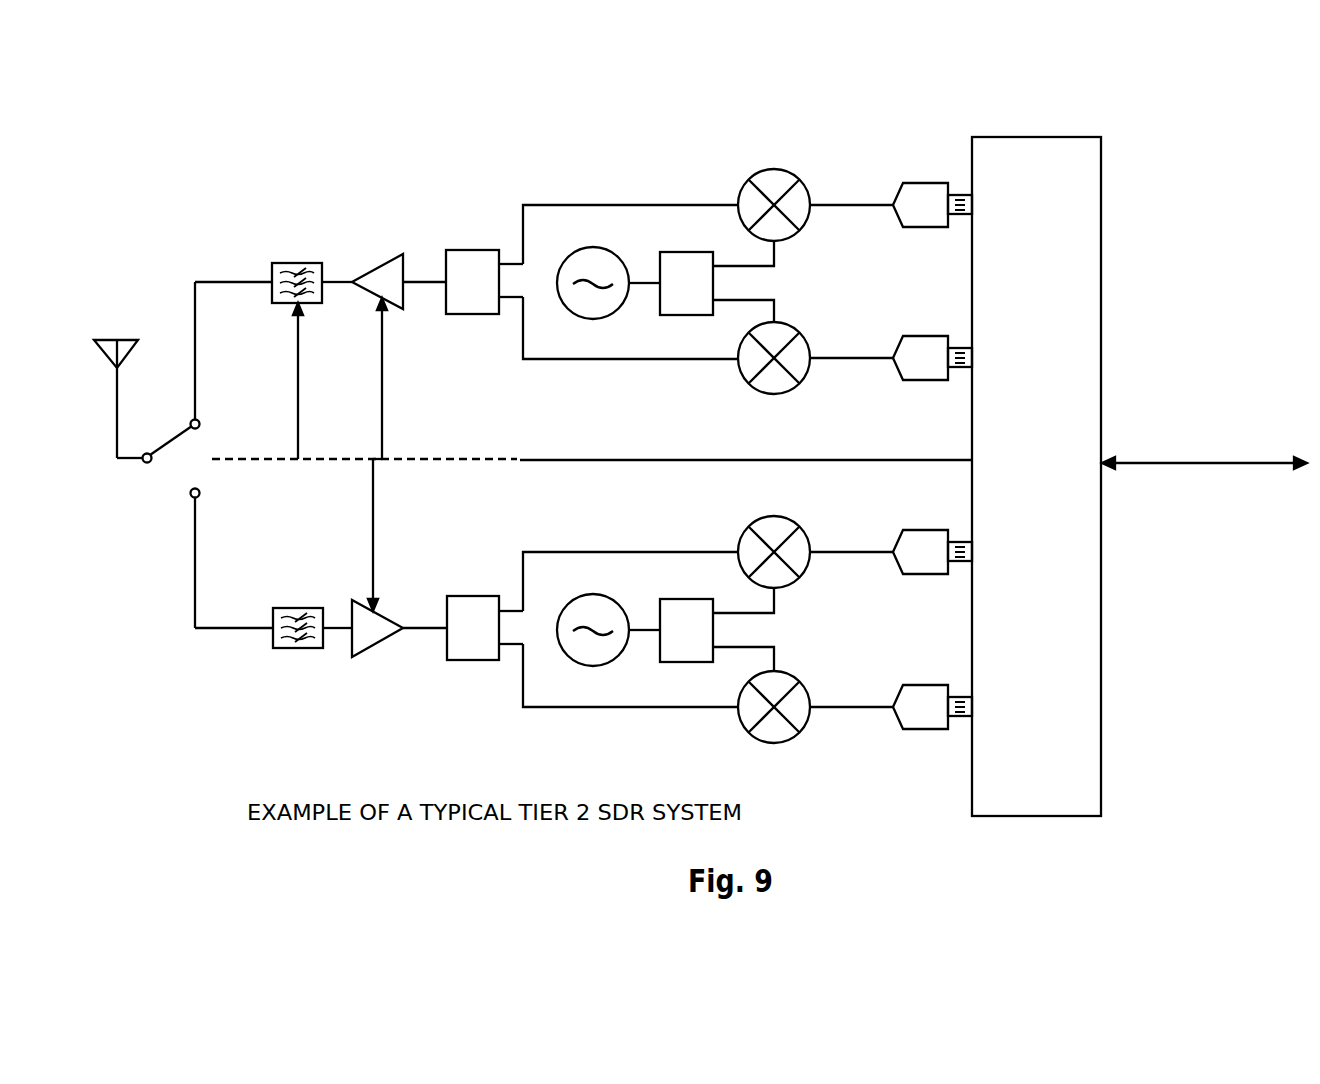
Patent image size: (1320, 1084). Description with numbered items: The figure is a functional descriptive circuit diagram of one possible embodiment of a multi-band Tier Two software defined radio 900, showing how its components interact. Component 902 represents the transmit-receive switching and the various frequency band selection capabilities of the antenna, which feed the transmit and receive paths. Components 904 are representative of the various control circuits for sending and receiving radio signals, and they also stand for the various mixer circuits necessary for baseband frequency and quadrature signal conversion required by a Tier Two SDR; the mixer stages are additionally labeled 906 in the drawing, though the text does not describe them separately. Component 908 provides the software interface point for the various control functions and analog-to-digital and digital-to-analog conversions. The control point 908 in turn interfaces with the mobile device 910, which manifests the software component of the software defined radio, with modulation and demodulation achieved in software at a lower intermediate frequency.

The multi-band Tier 2 SDR 900 is at (700, 445).
The antenna transmit-receive switching and frequency band selection component 902 is at (124, 380).
The control circuits 904 is at (337, 261).
The IQ mixer 906 is at (774, 179).
The control point 908 is at (1036, 463).
The mobile device 910 is at (1204, 490).